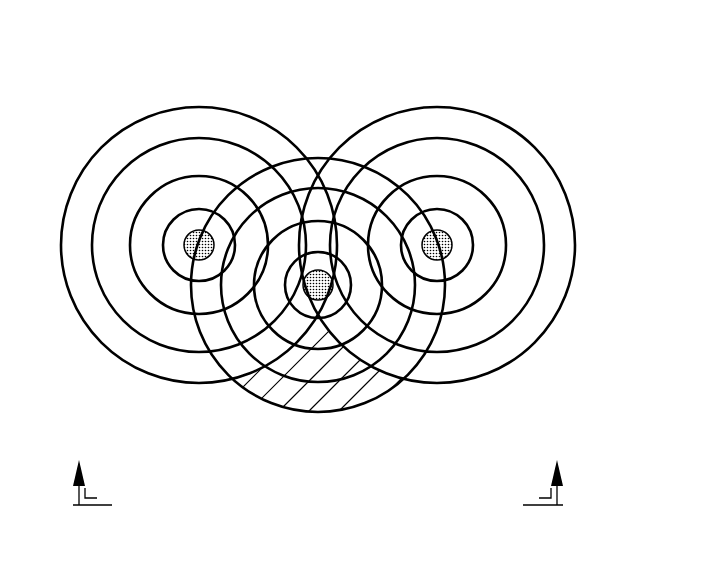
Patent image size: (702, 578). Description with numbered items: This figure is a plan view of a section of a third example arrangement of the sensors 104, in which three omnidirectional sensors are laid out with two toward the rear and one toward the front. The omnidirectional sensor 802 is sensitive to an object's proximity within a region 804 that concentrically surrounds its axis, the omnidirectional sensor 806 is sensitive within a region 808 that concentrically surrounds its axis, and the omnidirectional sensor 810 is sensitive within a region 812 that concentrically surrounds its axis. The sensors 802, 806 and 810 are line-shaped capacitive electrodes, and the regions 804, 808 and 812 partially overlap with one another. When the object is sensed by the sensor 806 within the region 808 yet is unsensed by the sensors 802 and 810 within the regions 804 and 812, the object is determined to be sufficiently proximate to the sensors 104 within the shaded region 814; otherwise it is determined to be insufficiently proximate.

The sensors 104 is at (250, 90).
The omnidirectional sensor 802 is at (190, 236).
The region 804 is at (150, 376).
The omnidirectional sensor 806 is at (334, 286).
The region 808 is at (268, 399).
The omnidirectional sensor 810 is at (448, 236).
The region 812 is at (486, 376).
The shaded region 814 is at (374, 393).